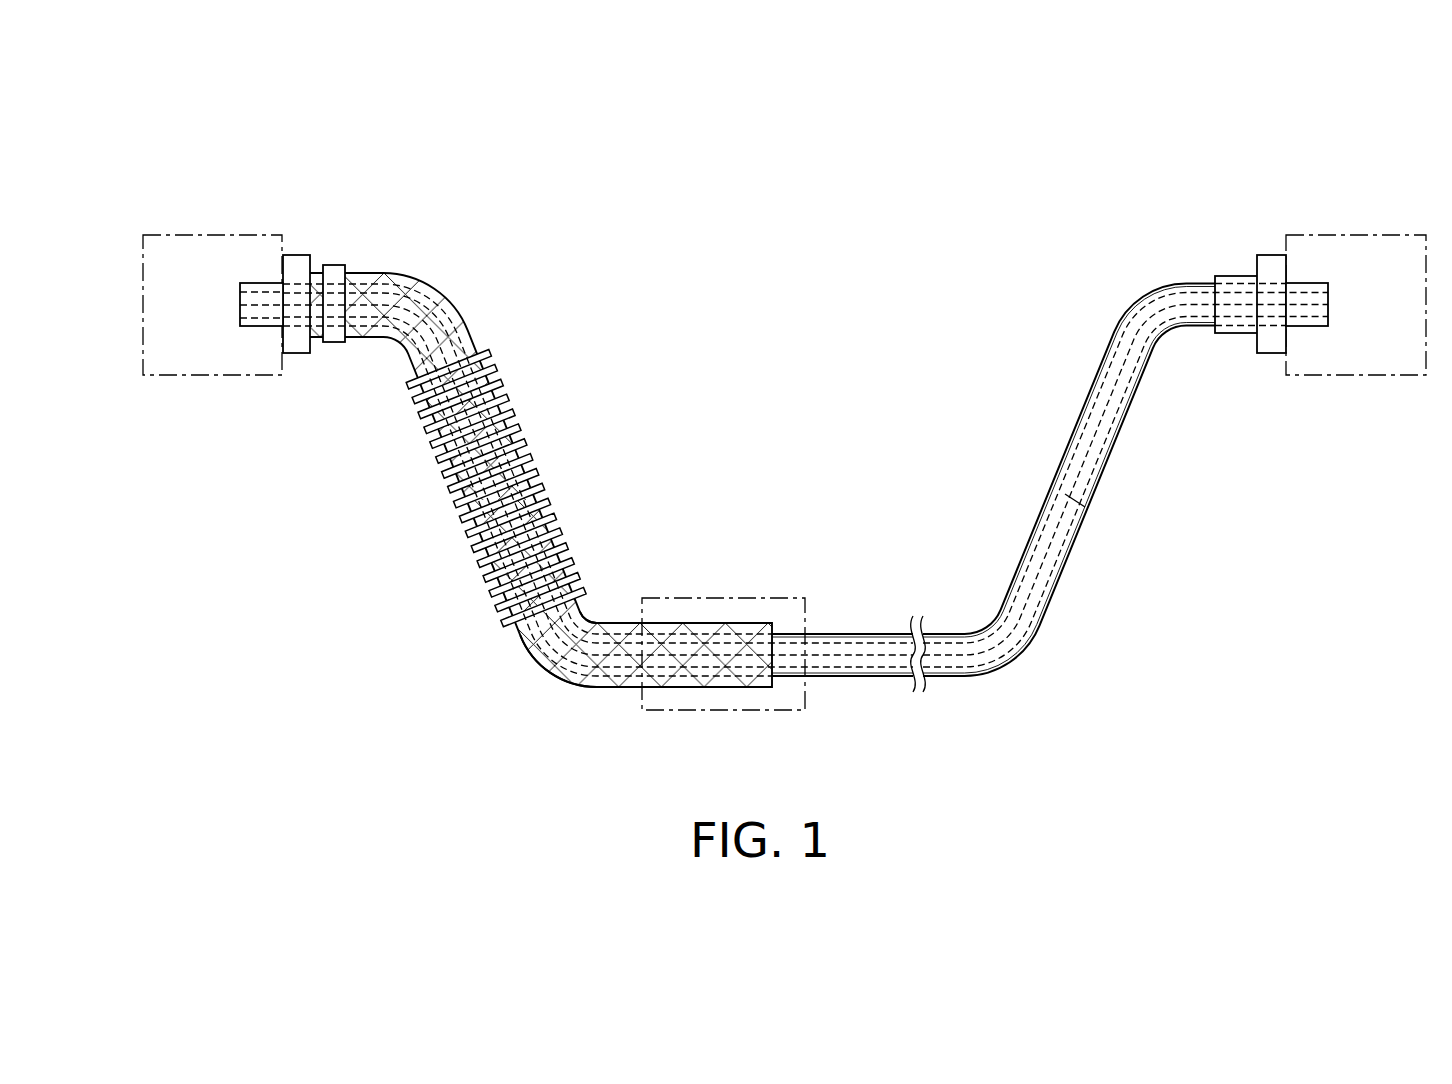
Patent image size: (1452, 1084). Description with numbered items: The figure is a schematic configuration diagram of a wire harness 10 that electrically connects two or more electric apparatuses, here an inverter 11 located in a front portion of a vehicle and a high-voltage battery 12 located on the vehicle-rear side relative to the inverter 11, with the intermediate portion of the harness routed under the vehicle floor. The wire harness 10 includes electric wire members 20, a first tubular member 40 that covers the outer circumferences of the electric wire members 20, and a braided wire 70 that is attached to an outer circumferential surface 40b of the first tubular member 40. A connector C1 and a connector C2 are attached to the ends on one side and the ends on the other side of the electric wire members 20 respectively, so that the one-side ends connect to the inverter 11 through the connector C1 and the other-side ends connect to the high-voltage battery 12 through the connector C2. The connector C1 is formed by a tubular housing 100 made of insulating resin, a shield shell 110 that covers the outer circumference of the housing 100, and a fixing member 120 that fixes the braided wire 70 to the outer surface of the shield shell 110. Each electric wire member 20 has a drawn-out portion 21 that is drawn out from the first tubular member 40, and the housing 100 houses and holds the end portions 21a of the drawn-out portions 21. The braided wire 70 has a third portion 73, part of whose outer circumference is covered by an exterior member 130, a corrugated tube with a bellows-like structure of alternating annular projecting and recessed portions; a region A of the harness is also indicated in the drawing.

The wire harness 10 is at (612, 499).
The inverter 11 is at (212, 234).
The high-voltage battery 12 is at (1360, 234).
The electric wire member 20 is at (1085, 507).
The drawn-out portion 21 is at (598, 665).
The end portion of drawn-out portion 21a is at (262, 320).
The first tubular member 40 is at (893, 632).
The outer circumferential surface 40b is at (840, 632).
The braided wire 70 is at (447, 298).
The third portion 73 is at (597, 620).
The housing 100 is at (262, 283).
The shield shell 110 is at (293, 255).
The fixing member 120 is at (330, 265).
The exterior member 130 is at (505, 388).
The region A is at (740, 597).
The connector C1 is at (326, 296).
The connector C2 is at (1268, 355).